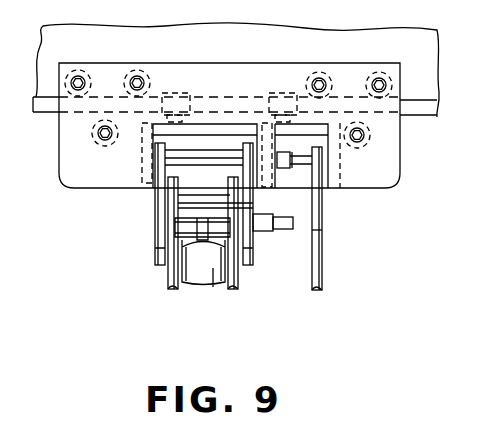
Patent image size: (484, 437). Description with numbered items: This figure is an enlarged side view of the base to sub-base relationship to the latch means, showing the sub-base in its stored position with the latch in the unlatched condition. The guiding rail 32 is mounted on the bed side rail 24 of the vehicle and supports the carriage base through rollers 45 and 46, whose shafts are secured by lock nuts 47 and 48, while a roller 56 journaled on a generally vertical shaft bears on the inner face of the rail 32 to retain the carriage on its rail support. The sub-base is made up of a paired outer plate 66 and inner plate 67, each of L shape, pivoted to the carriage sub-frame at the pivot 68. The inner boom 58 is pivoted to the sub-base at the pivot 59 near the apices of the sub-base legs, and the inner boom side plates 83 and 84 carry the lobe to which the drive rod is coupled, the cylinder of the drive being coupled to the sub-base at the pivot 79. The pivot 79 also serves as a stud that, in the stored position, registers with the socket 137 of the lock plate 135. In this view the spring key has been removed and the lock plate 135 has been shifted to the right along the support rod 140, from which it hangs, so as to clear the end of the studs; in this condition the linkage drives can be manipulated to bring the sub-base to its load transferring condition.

The side rail 24 is at (42, 48).
The guiding rail 32 is at (425, 116).
The roller 45 is at (388, 72).
The roller 46 is at (93, 138).
The lock nut 47 is at (134, 80).
The lock nut 48 is at (363, 140).
The roller 56 is at (275, 92).
The inner boom 58 is at (222, 292).
The pivot 59 is at (190, 200).
The outer plate 66 is at (250, 260).
The inner plate 67 is at (158, 257).
The pivot 68 is at (180, 158).
The pivot 79 is at (283, 232).
The inner boom side plate 83 is at (172, 277).
The inner boom side plate 84 is at (237, 272).
The lock plate 135 is at (351, 244).
The socket 137 is at (323, 233).
The support rod 140 is at (303, 168).